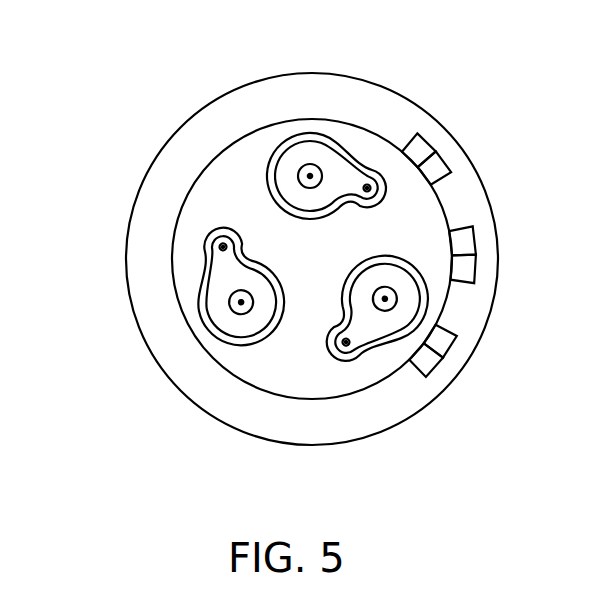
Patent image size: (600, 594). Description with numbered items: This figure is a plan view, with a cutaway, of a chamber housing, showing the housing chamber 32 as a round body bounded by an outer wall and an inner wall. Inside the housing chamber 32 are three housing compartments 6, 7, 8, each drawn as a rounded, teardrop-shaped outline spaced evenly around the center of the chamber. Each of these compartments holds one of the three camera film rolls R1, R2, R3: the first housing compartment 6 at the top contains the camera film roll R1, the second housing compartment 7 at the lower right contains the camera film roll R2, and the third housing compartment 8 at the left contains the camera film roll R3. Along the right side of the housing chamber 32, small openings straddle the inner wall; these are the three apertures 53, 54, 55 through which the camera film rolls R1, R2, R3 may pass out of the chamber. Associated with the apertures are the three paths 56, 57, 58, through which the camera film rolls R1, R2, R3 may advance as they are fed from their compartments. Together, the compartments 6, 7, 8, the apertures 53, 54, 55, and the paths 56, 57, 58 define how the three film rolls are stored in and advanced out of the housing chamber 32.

The housing chamber 32 is at (131, 69).
The housing compartment 6 is at (322, 137).
The camera film roll R1 is at (338, 153).
The housing compartment 8 is at (190, 280).
The camera film roll R3 is at (207, 297).
The housing compartment 7 is at (358, 358).
The camera film roll R2 is at (377, 345).
The path 56 is at (436, 157).
The aperture 53 is at (447, 171).
The aperture 54 is at (473, 245).
The path 57 is at (473, 263).
The aperture 55 is at (445, 352).
The path 58 is at (438, 357).